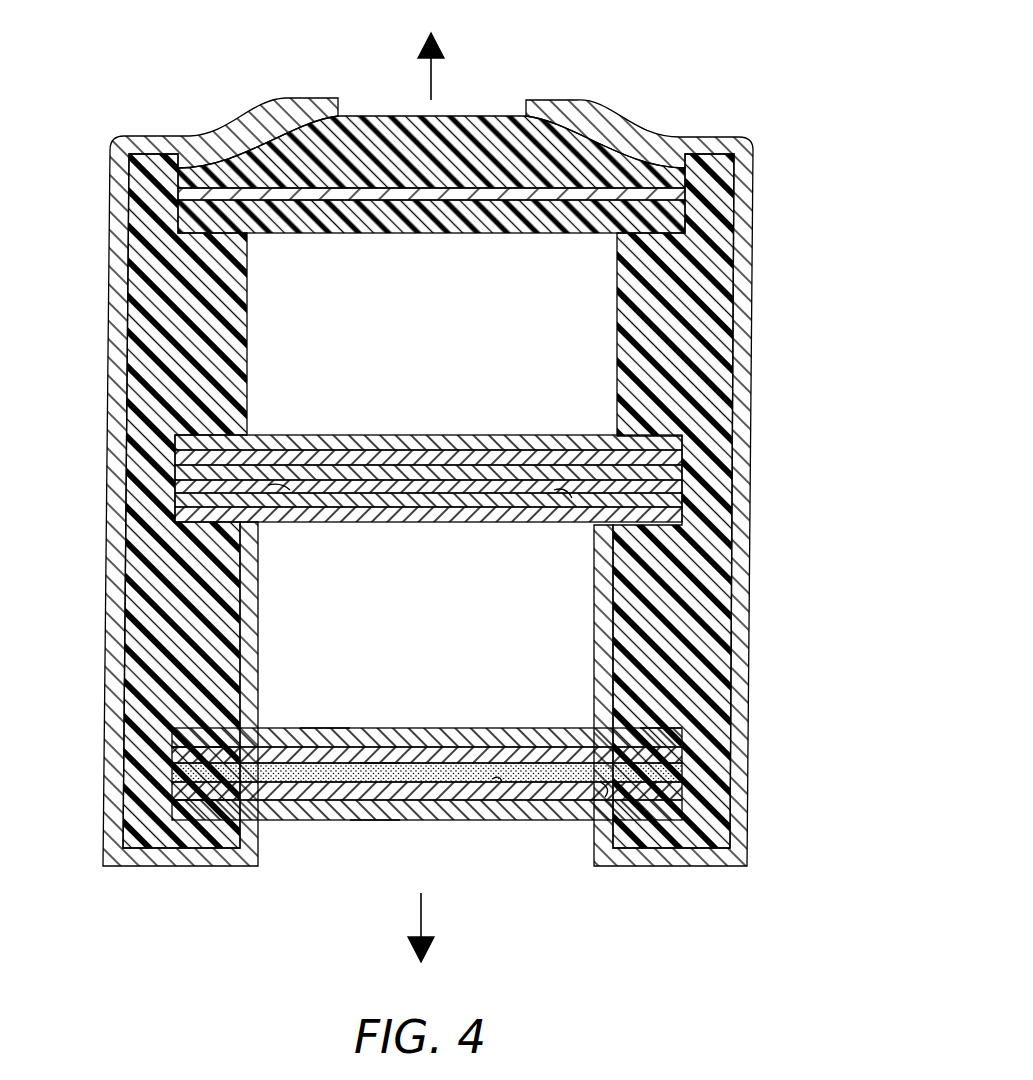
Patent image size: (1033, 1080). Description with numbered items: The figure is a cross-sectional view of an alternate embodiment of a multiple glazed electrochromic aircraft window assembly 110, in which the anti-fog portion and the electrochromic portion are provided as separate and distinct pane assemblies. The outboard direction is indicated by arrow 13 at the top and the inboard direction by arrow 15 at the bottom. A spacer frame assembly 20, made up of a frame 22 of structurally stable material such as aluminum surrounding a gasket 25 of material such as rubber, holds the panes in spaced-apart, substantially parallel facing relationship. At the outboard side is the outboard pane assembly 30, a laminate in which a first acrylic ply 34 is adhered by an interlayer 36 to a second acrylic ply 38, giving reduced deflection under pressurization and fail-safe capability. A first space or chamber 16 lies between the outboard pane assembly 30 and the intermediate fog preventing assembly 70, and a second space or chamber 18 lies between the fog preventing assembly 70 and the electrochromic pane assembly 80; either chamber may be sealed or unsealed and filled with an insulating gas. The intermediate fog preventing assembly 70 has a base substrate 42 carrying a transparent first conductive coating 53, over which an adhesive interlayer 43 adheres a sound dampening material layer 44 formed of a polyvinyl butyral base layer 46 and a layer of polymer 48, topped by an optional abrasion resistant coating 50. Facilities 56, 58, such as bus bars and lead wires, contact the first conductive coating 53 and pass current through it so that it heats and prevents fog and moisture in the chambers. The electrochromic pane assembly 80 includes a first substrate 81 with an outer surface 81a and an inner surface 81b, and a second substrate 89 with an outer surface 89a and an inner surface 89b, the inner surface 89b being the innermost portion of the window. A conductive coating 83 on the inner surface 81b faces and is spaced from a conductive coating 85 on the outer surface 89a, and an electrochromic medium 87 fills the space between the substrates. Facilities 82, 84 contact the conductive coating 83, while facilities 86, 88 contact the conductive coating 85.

The spacer frame assembly 20 is at (178, 97).
The arrow indicating outboard direction 13 is at (430, 72).
The outboard pane assembly 30 is at (470, 92).
The electrochromic aircraft window assembly 110 is at (780, 132).
The first acrylic ply 34 is at (662, 183).
The interlayer 36 is at (667, 196).
The second acrylic ply 38 is at (680, 222).
The frame 22 is at (108, 232).
The gasket 25 is at (110, 302).
The first space or chamber 16 is at (414, 341).
The intermediate fog preventing assembly 70 is at (501, 395).
The abrasion resistant coating 50 is at (175, 437).
The layer of polymer 48 is at (174, 456).
The polyvinyl butyral base layer 46 is at (175, 472).
The sound dampening material layer 44 is at (683, 455).
The adhesive interlayer 43 is at (175, 488).
The first conductive coating 53 is at (690, 503).
The base substrate 42 is at (683, 520).
The facility 56 is at (290, 490).
The facility 58 is at (572, 498).
The second space or chamber 18 is at (414, 632).
The electrochromic pane assembly 80 is at (498, 700).
The first substrate 81 is at (665, 745).
The outer surface 81a is at (325, 728).
The inner surface 81b is at (375, 770).
The facility 82 is at (655, 728).
The conductive coating 83 is at (530, 757).
The facility 84 is at (205, 748).
The conductive coating 85 is at (316, 800).
The facility 86 is at (600, 782).
The electrochromic medium 87 is at (173, 775).
The facility 88 is at (205, 795).
The second substrate 89 is at (670, 810).
The outer surface 89a is at (502, 782).
The inner surface 89b is at (370, 822).
The arrow indicating inboard direction 15 is at (418, 928).